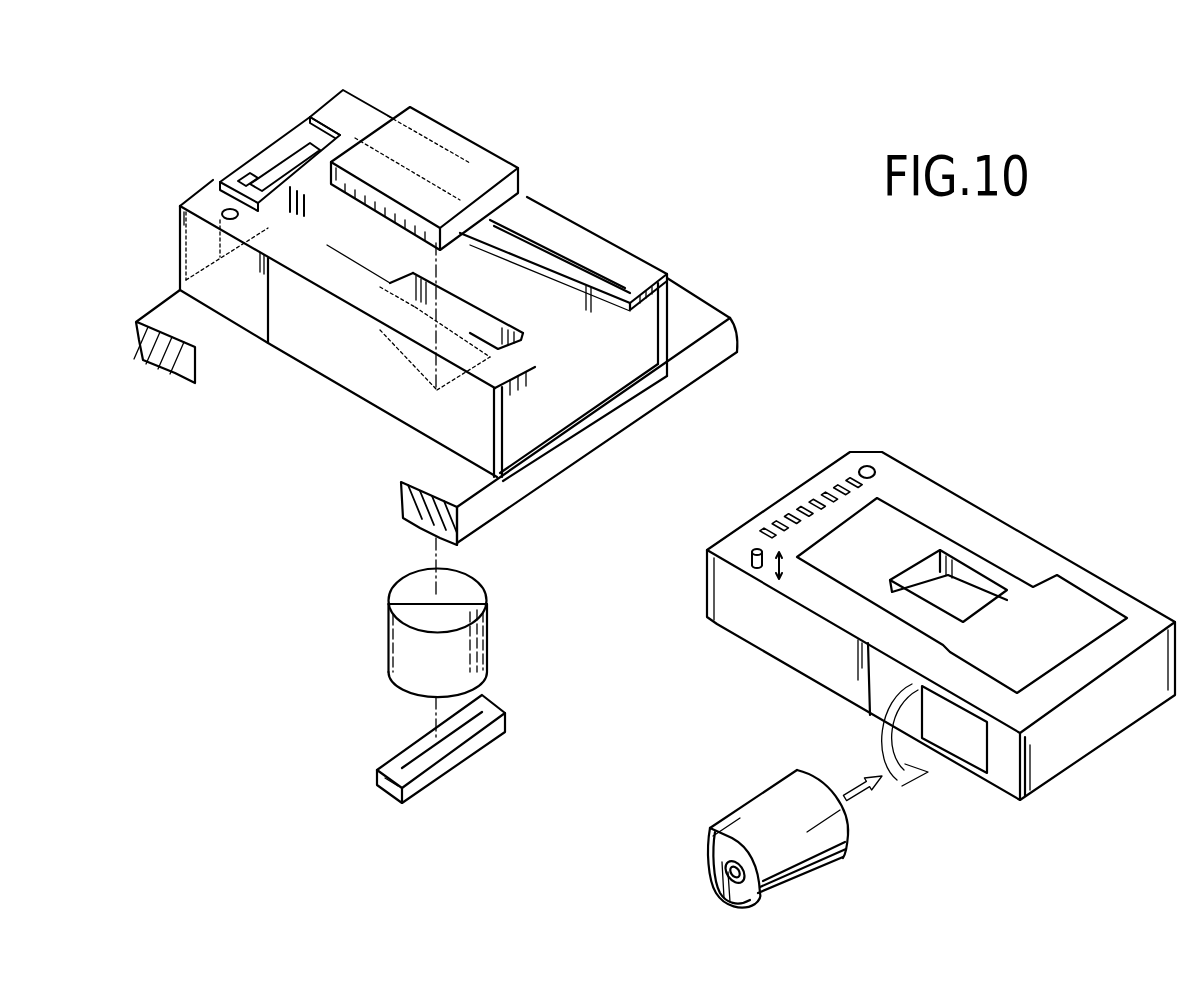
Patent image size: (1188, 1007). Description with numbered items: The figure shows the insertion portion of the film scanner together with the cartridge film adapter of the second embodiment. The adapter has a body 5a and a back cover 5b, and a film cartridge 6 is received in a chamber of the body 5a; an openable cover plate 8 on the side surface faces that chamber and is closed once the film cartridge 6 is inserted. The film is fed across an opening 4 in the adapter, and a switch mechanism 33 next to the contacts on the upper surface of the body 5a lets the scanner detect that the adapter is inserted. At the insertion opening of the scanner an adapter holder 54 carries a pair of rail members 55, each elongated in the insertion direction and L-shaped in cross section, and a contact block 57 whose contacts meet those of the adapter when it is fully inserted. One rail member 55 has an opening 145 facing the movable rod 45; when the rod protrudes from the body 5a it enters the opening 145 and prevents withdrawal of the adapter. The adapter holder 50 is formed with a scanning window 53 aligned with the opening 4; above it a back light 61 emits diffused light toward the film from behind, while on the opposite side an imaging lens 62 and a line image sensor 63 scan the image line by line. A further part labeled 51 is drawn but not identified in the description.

The opening 145 is at (220, 207).
The contact block 57 is at (242, 172).
The back light 61 is at (463, 128).
The adapter holder 50 is at (586, 221).
The rail members 55 is at (612, 257).
The scanning window 53 is at (512, 300).
The base plate 51 is at (690, 327).
The adapter holder 54 is at (592, 397).
The imaging lens 62 is at (470, 645).
The line image sensor 63 is at (447, 747).
The switch mechanism 33 is at (860, 466).
The body 5a is at (945, 478).
The back cover 5b is at (1083, 612).
The movable rod 45 is at (752, 553).
The opening 4 is at (964, 600).
The cover plate 8 is at (968, 750).
The film cartridge 6 is at (797, 857).